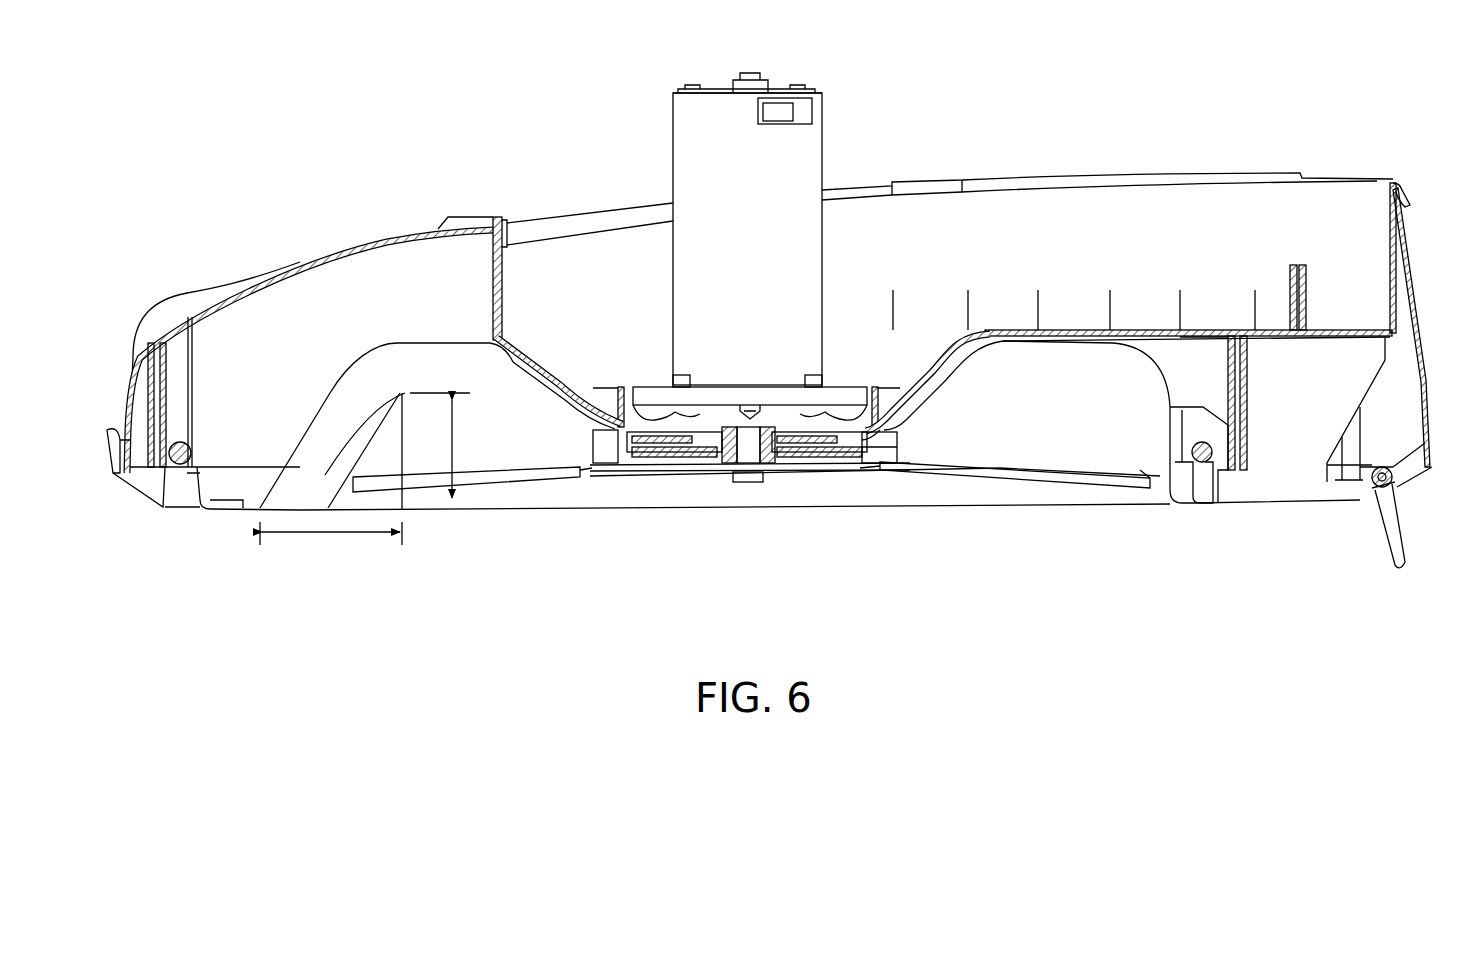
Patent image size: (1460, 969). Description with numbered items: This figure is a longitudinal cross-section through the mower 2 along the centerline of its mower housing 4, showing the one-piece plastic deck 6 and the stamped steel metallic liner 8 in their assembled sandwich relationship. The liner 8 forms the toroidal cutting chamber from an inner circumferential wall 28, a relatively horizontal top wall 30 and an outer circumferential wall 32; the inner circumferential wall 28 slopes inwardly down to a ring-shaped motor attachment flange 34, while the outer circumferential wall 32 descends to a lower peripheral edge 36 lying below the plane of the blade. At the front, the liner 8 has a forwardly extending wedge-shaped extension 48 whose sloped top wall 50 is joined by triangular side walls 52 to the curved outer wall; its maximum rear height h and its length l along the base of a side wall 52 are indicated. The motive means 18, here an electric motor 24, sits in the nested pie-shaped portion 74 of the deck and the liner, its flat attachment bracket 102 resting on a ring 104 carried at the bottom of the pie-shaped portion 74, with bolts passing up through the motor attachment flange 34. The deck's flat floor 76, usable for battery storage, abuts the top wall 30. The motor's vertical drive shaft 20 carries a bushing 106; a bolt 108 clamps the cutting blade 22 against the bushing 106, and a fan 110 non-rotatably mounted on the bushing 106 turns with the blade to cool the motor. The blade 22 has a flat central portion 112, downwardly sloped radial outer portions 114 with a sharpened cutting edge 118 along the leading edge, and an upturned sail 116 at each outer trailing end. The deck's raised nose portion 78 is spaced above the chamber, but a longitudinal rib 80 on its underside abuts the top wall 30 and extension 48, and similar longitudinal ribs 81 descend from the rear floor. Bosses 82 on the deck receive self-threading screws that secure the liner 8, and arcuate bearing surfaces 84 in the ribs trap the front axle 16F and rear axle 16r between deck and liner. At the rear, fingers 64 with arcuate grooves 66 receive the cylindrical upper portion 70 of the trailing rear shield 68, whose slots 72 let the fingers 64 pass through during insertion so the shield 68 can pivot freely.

The mower 2 is at (1027, 94).
The mower housing 4 is at (1097, 152).
The plastic deck 6 is at (928, 177).
The metallic liner 8 is at (470, 510).
The motive means 18 is at (673, 95).
The electric motor 24 is at (800, 155).
The flat attachment bracket 102 is at (675, 385).
The ring 104 is at (835, 410).
The raised nose portion 78 is at (335, 253).
The longitudinally extending ribs 80 is at (362, 297).
The wedge-shaped extension 48 is at (314, 385).
The top wall 50 is at (300, 432).
The side walls 52 is at (325, 475).
The bosses 82 is at (166, 383).
The arcuate bearing surfaces 84 is at (180, 443).
The front axle 16F is at (190, 460).
The rear axle 16r is at (1210, 480).
The height h is at (455, 425).
The length l is at (320, 540).
The upturned sail 116 is at (400, 475).
The downwardly sloped radial outer portions 114 is at (514, 465).
The cutting blade 22 is at (705, 467).
The inner circumferential wall 28 is at (950, 388).
The top wall 30 is at (1050, 345).
The outer circumferential wall 32 is at (1165, 405).
The motor attachment flange 34 is at (897, 437).
The pie-shaped portion 74 is at (928, 370).
The flat floor 76 is at (1140, 330).
The longitudinal ribs 81 is at (1185, 382).
The drive shaft 20 is at (748, 448).
The bolt 108 is at (745, 480).
The bushing 106 is at (790, 465).
The fan 110 is at (858, 455).
The flat central portion 112 is at (655, 465).
The sharpened cutting edge 118 is at (1012, 472).
The lower peripheral edge 36 is at (1058, 505).
The fingers 64 is at (1362, 490).
The arcuate grooves 66 is at (1390, 486).
The cylindrical upper portion 70 is at (1383, 465).
The slots 72 is at (1390, 490).
The trailing rear shield 68 is at (1398, 532).